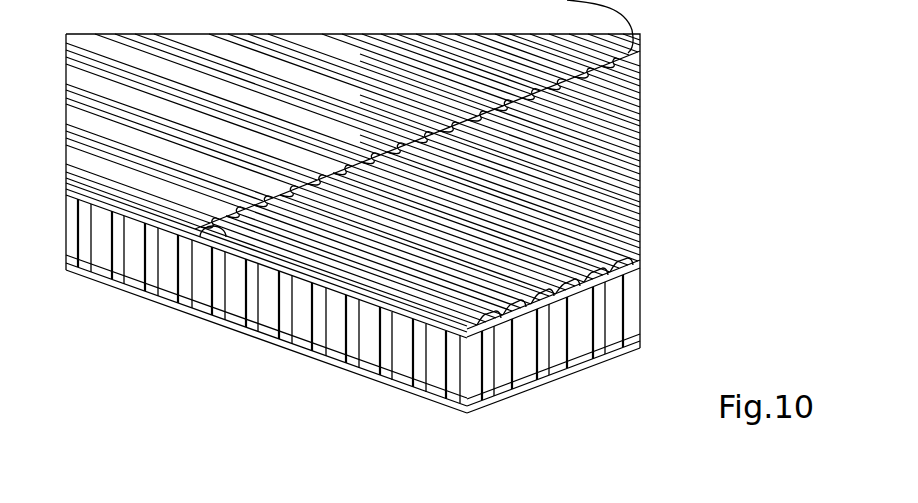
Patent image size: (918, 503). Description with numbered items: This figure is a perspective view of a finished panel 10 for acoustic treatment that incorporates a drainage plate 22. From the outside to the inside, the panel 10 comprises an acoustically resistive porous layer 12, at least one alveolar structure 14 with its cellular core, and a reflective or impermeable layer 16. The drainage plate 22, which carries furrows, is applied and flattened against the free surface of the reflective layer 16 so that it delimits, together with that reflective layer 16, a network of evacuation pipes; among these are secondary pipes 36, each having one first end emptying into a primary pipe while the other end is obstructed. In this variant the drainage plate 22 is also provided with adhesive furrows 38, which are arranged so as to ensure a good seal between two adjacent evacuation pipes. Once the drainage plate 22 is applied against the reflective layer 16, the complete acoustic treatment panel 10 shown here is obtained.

The panel for acoustic treatment 10 is at (47, 183).
The acoustically resistive porous layer 12 is at (467, 410).
The alveolar structure 14 is at (627, 321).
The reflective layer 16 is at (642, 266).
The drainage plate 22 is at (430, 305).
The secondary pipes 36 is at (625, 140).
The adhesive furrows 38 is at (622, 190).